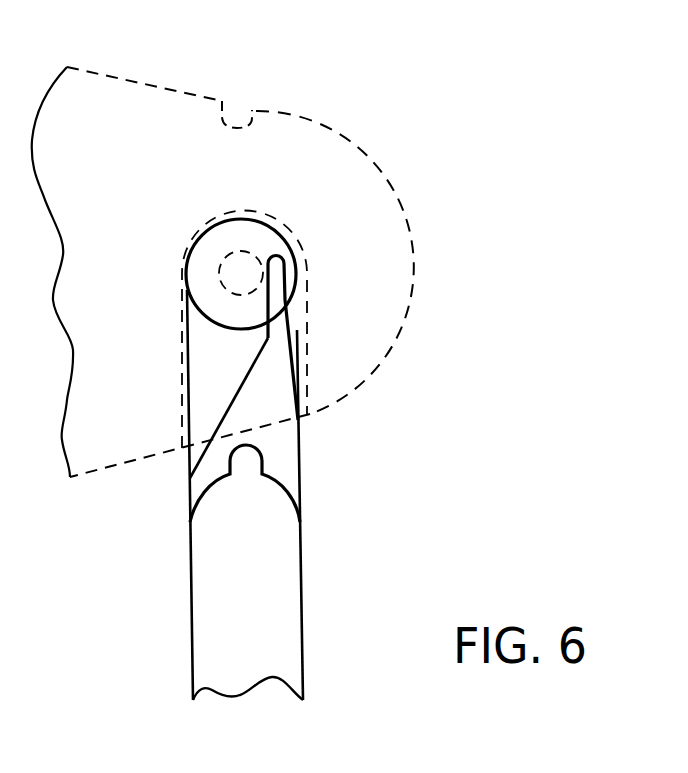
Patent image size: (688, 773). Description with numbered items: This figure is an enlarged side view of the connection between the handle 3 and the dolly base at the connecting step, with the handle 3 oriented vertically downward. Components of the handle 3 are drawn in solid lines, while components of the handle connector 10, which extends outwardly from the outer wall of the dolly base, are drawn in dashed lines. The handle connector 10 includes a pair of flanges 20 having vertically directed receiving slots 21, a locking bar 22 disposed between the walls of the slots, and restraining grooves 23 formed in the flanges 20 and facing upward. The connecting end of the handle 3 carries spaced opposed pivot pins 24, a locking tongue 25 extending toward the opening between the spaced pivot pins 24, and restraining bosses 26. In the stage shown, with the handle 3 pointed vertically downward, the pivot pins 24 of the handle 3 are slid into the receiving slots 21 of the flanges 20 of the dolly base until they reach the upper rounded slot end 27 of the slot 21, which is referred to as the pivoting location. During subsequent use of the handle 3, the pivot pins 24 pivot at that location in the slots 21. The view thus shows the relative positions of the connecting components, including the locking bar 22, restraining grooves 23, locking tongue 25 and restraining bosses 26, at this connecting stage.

The handle 3 is at (253, 644).
The handle connector 10 is at (152, 203).
The flanges 20 is at (480, 118).
The receiving slots 21 is at (239, 387).
The locking bar 22 is at (242, 273).
The restraining grooves 23 is at (240, 88).
The pivot pins 24 is at (252, 322).
The locking tongue 25 is at (278, 273).
The restraining bosses 26 is at (262, 471).
The upper rounded slot end 27 is at (353, 252).